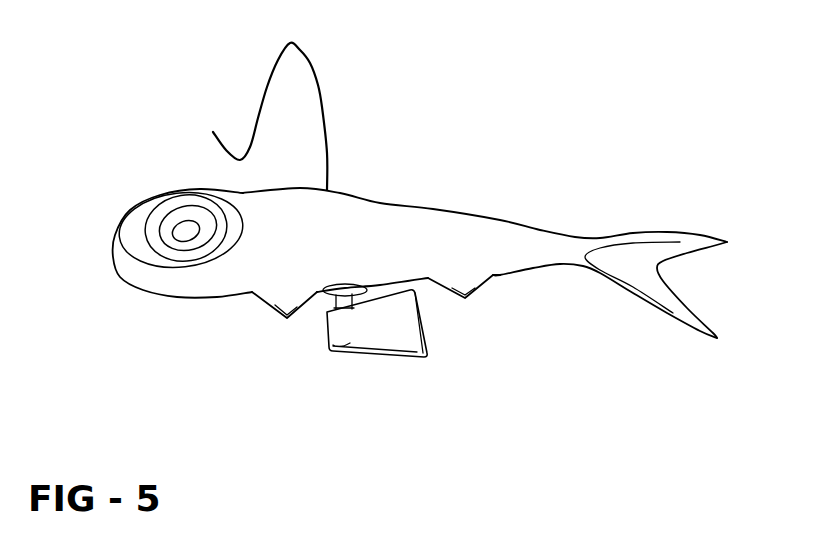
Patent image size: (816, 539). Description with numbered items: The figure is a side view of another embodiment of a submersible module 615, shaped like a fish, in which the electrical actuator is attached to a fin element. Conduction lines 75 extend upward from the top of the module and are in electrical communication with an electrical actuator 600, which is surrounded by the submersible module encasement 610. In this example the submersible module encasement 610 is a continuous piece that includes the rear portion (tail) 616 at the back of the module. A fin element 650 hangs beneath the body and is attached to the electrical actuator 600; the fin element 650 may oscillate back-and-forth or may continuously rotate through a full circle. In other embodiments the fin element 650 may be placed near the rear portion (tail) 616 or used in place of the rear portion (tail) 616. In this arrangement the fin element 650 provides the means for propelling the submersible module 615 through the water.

The conduction lines 75 is at (260, 112).
The electrical actuator 600 is at (353, 287).
The submersible module encasement 610 is at (265, 194).
The submersible module 615 is at (560, 226).
The rear portion (tail) 616 is at (510, 257).
The fin element 650 is at (375, 317).